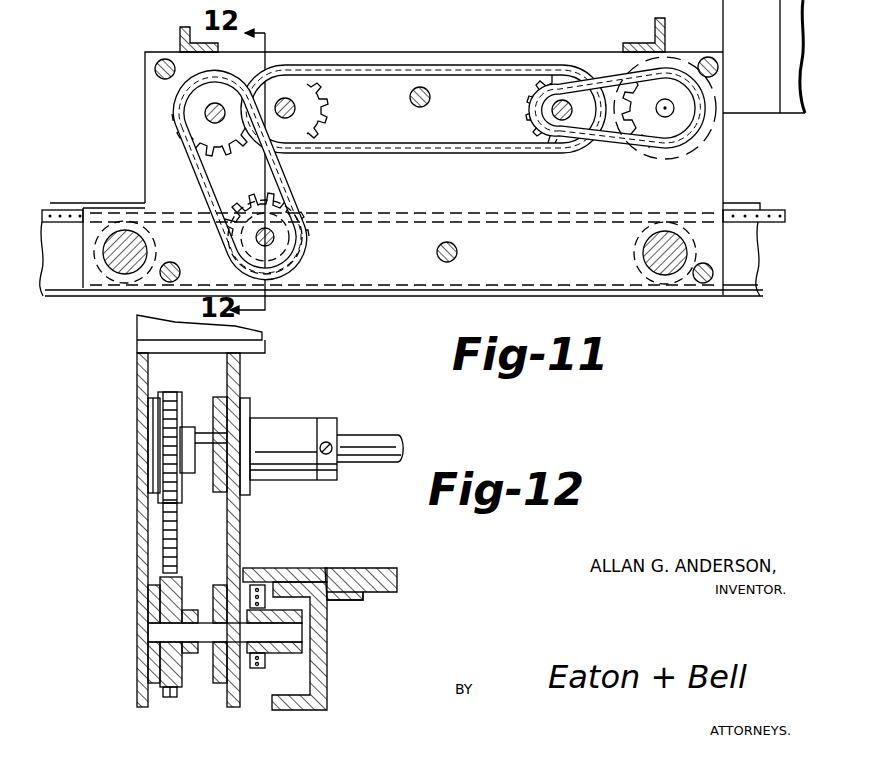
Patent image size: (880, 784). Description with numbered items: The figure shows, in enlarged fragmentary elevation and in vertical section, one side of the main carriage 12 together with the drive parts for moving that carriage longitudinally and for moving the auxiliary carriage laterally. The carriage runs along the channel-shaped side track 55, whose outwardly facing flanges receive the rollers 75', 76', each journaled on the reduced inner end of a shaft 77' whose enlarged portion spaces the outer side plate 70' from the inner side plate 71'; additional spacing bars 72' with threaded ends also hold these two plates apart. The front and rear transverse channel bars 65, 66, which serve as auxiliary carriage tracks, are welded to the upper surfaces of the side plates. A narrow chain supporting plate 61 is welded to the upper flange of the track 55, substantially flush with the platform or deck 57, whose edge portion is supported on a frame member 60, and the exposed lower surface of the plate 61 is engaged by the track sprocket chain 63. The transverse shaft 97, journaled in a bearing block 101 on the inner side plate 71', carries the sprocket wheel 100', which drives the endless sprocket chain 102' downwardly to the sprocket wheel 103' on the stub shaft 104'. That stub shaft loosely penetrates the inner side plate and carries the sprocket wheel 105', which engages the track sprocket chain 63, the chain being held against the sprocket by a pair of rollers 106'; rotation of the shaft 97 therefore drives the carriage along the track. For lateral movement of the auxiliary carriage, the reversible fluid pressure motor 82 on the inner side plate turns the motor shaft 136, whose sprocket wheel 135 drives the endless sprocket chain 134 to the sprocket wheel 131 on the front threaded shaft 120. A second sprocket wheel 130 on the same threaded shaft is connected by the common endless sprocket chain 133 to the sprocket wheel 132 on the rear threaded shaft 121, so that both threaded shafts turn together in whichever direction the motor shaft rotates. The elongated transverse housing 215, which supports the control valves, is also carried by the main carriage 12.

In FIG. 11, the main carriage 12 is at (145, 123).
In FIG. 12, the main carriage 12 is at (134, 531).
In FIG. 11, the side frame member or track 55 is at (63, 283).
In FIG. 12, the side frame member or track 55 is at (326, 667).
In FIG. 12, the platform or deck 57 is at (365, 568).
In FIG. 12, the frame member 60 is at (340, 600).
In FIG. 11, the chain supporting plate 61 is at (76, 205).
In FIG. 12, the chain supporting plate 61 is at (295, 568).
In FIG. 11, the track sprocket chain 63 is at (47, 210).
In FIG. 12, the track sprocket chain 63 is at (258, 586).
In FIG. 11, the transverse channel bar or auxiliary carriage track 65 is at (656, 24).
In FIG. 11, the transverse channel bar or auxiliary carriage track 66 is at (181, 30).
In FIG. 12, the transverse channel bar or auxiliary carriage track 66 is at (137, 328).
In FIG. 12, the outer main carriage side plate 70' is at (120, 530).
In FIG. 11, the inner main carriage side plate 71' is at (440, 37).
In FIG. 12, the inner main carriage side plate 71' is at (256, 530).
In FIG. 11, the spacing bar 72' is at (419, 169).
In FIG. 11, the roller or wheel 75' is at (615, 254).
In FIG. 11, the roller or wheel 76' is at (382, 248).
In FIG. 11, the shaft or bar 77' is at (406, 229).
In FIG. 11, the reversible motor 82 is at (676, 160).
In FIG. 11, the transverse shaft 97 is at (222, 96).
In FIG. 12, the transverse shaft 97 is at (372, 437).
In FIG. 11, the sprocket wheel 100' is at (202, 140).
In FIG. 12, the sprocket wheel 100' is at (199, 431).
In FIG. 12, the bearing block 101 is at (275, 420).
In FIG. 11, the endless sprocket chain 102' is at (259, 174).
In FIG. 12, the endless sprocket chain 102' is at (180, 619).
In FIG. 11, the sprocket wheel 103' is at (264, 203).
In FIG. 12, the sprocket wheel 103' is at (187, 653).
In FIG. 11, the stub shaft 104' is at (300, 253).
In FIG. 12, the stub shaft 104' is at (197, 634).
In FIG. 12, the sprocket wheel 105' is at (278, 650).
In FIG. 11, the roller 106' is at (268, 237).
In FIG. 11, the front threaded shaft 120 is at (562, 100).
In FIG. 11, the rear threaded shaft 121 is at (296, 106).
In FIG. 11, the sprocket wheel 130 is at (528, 122).
In FIG. 11, the sprocket wheel 131 is at (535, 136).
In FIG. 11, the sprocket wheel 132 is at (324, 120).
In FIG. 11, the endless sprocket chain 133 is at (413, 155).
In FIG. 11, the endless sprocket chain 134 is at (610, 150).
In FIG. 11, the sprocket wheel 135 is at (652, 150).
In FIG. 11, the motor shaft 136 is at (666, 104).
In FIG. 11, the transverse housing 215 is at (790, 113).